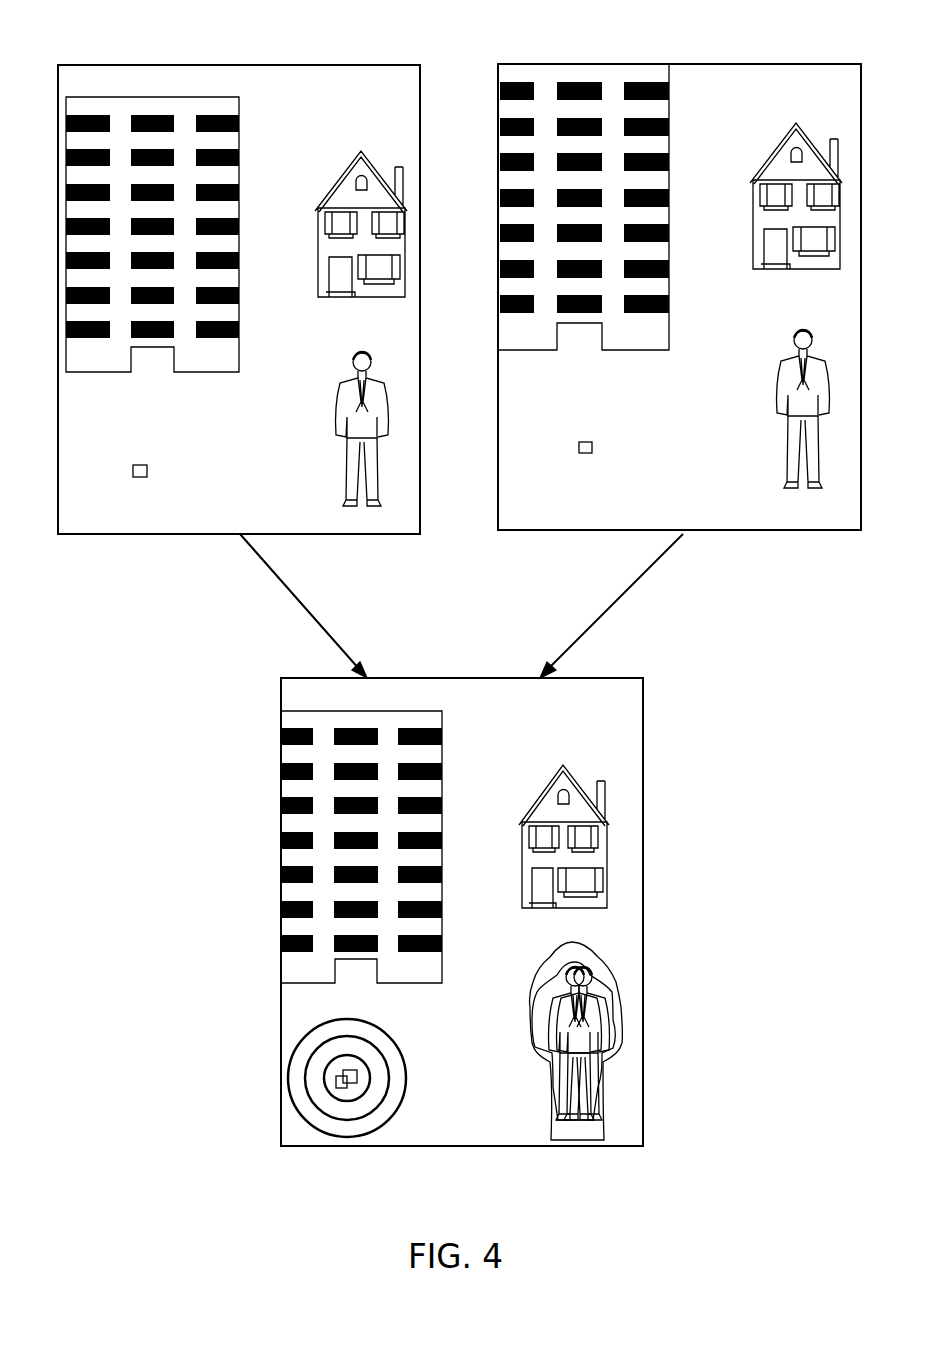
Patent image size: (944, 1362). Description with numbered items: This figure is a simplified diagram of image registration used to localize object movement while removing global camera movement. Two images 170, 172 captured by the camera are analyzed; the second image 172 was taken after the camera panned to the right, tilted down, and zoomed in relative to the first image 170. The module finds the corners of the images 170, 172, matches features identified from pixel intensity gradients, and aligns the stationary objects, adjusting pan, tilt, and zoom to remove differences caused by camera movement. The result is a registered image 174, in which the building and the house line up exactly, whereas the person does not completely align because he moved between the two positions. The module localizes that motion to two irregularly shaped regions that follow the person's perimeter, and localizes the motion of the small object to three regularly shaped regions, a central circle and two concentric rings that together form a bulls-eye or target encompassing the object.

The image 170 is at (237, 65).
The image 172 is at (733, 63).
The registered image 174 is at (460, 678).